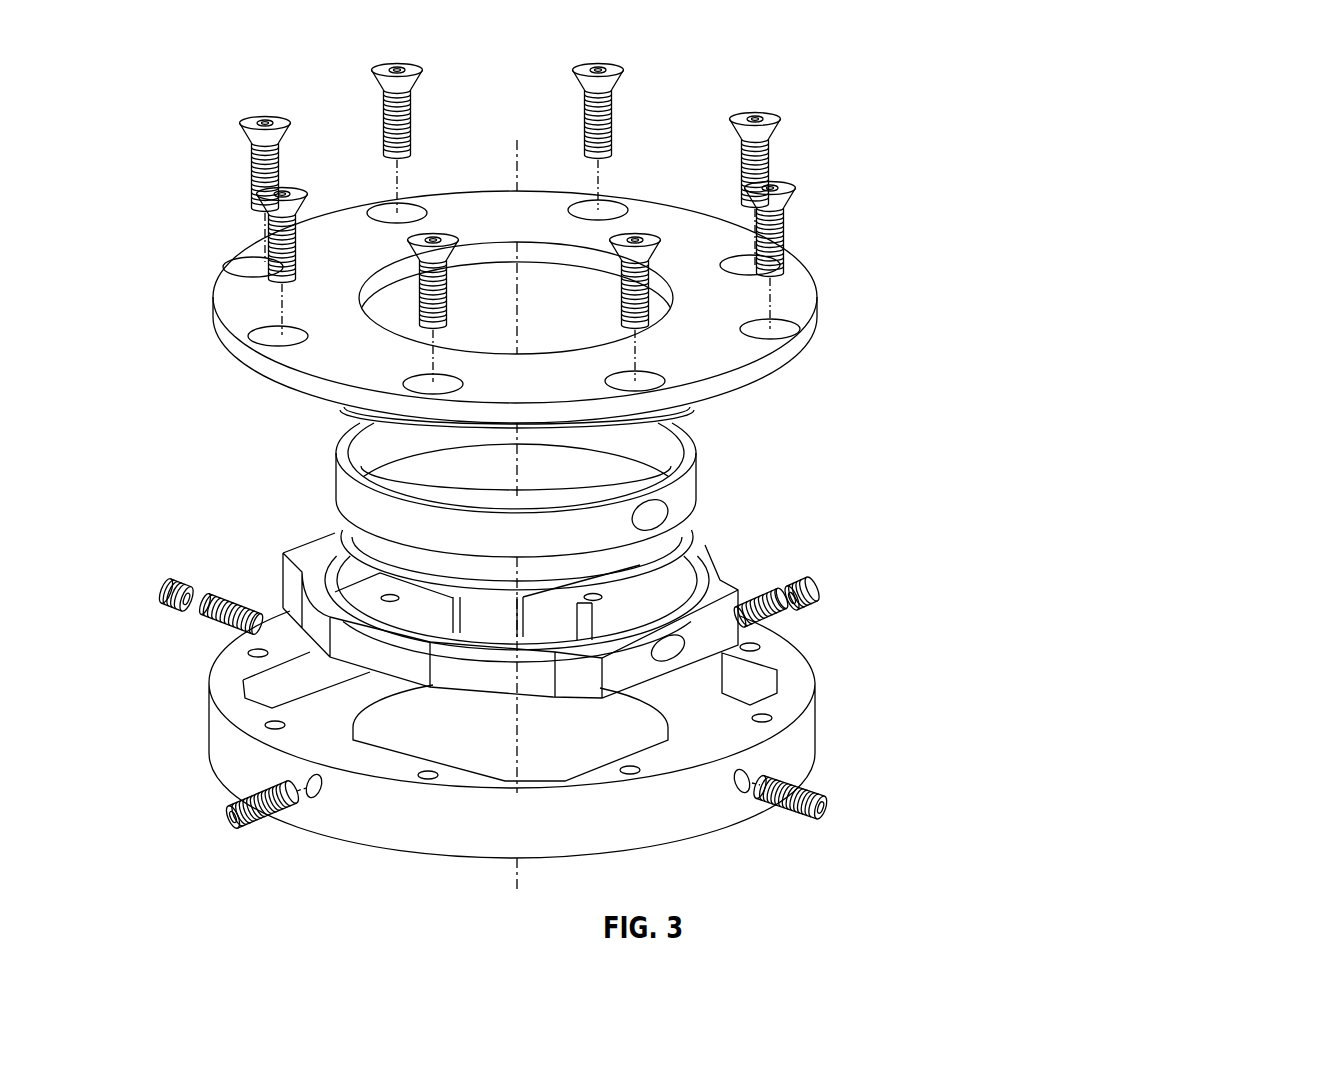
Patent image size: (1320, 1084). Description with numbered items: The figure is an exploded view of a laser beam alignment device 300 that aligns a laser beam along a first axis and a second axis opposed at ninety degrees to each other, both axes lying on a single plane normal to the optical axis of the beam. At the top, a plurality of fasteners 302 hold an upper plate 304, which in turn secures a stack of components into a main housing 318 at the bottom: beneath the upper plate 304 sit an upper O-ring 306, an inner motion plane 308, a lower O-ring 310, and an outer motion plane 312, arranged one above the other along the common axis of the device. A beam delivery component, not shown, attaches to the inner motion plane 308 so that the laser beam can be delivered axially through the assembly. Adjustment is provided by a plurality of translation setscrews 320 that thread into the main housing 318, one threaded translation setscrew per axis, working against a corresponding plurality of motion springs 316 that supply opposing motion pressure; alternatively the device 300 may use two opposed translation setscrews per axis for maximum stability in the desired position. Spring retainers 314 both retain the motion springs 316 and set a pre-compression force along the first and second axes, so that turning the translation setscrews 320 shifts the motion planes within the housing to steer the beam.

The laser beam alignment device 300 is at (1150, 203).
The fasteners 302 is at (797, 201).
The upper plate 304 is at (816, 288).
The upper O-ring 306 is at (715, 418).
The inner motion plane 308 is at (681, 491).
The lower O-ring 310 is at (697, 519).
The outer motion plane 312 is at (722, 572).
The spring retainers 314 is at (818, 595).
The motion springs 316 is at (780, 617).
The main housing 318 is at (803, 748).
The translation setscrews 320 is at (823, 808).